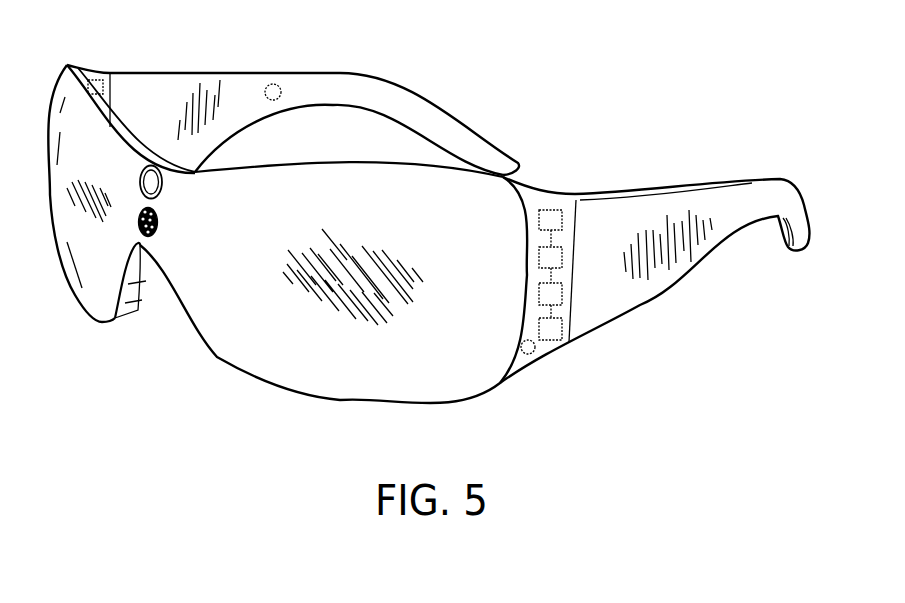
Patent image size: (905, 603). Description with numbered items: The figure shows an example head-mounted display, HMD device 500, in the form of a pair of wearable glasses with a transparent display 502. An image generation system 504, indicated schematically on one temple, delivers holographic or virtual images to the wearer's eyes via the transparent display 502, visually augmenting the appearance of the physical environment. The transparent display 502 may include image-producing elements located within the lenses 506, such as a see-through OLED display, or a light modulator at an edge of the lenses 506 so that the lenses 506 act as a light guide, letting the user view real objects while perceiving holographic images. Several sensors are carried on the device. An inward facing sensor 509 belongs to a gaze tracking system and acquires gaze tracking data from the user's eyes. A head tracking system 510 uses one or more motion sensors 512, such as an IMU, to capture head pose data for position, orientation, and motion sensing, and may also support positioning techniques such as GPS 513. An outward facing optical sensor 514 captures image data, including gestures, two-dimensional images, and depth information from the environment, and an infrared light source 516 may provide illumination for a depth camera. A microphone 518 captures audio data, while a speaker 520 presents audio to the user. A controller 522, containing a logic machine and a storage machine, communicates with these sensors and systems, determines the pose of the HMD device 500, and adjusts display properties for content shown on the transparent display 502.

The HMD device 500 is at (475, 56).
The transparent display 502 is at (242, 343).
The image generation system 504 is at (550, 210).
The lenses 506 is at (133, 293).
The inward facing sensor 509 is at (195, 162).
The head tracking system 510 is at (563, 257).
The motion sensors 512 is at (563, 293).
The GPS 513 is at (563, 323).
The optical sensor 514 is at (172, 188).
The infrared light source 516 is at (168, 232).
The microphone 518 is at (535, 358).
The speaker 520 is at (275, 80).
The controller 522 is at (95, 75).